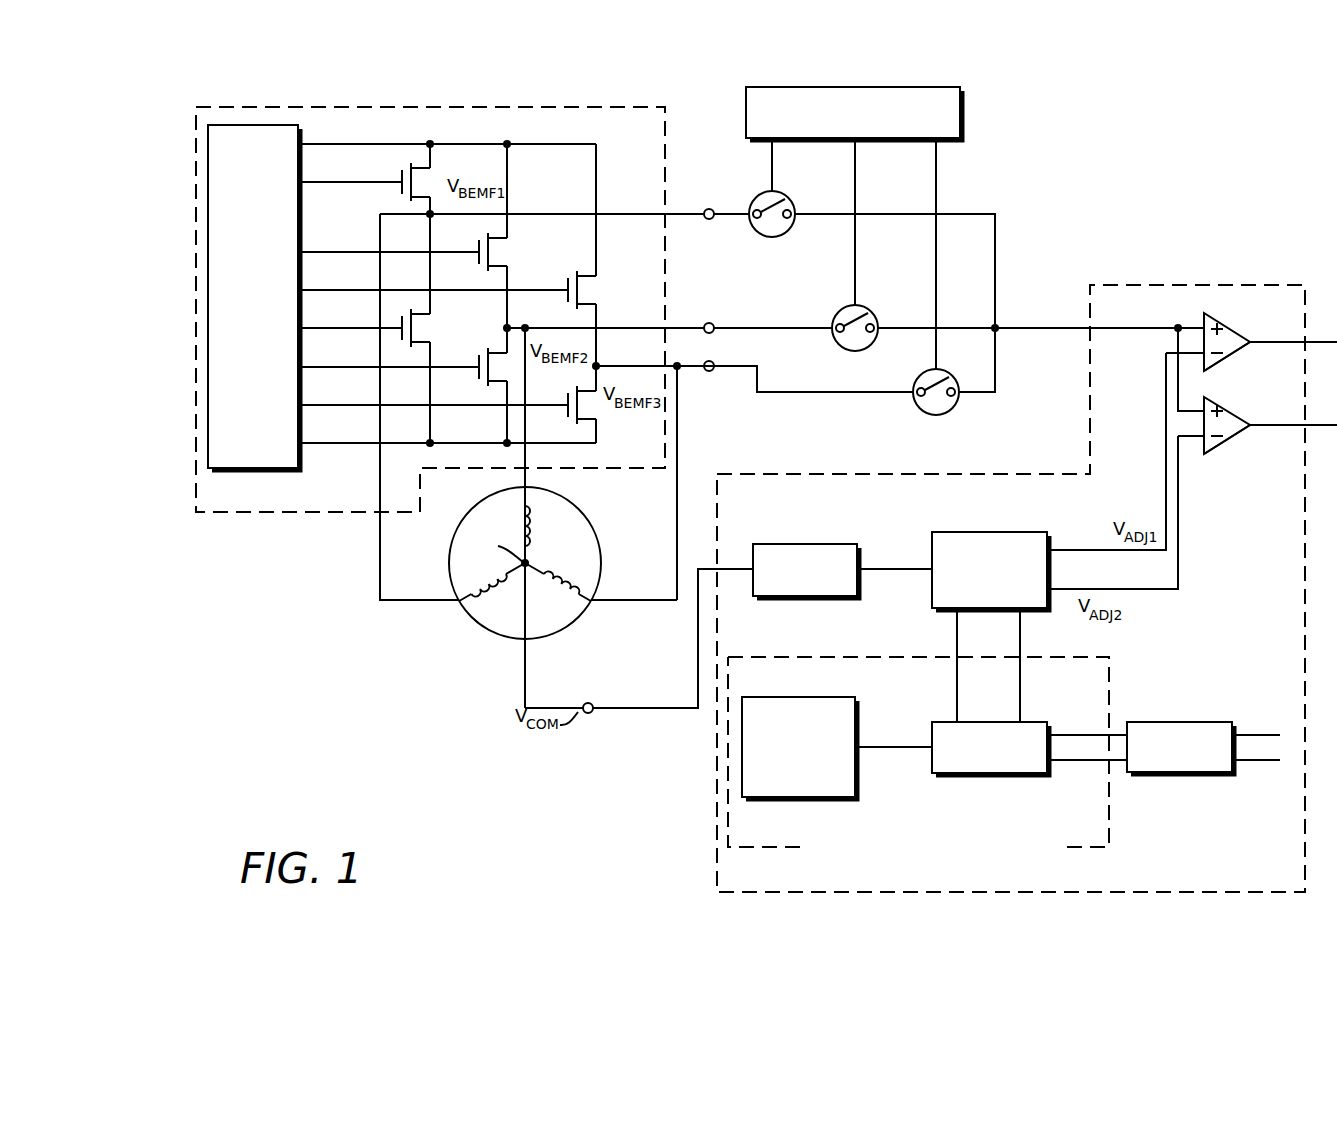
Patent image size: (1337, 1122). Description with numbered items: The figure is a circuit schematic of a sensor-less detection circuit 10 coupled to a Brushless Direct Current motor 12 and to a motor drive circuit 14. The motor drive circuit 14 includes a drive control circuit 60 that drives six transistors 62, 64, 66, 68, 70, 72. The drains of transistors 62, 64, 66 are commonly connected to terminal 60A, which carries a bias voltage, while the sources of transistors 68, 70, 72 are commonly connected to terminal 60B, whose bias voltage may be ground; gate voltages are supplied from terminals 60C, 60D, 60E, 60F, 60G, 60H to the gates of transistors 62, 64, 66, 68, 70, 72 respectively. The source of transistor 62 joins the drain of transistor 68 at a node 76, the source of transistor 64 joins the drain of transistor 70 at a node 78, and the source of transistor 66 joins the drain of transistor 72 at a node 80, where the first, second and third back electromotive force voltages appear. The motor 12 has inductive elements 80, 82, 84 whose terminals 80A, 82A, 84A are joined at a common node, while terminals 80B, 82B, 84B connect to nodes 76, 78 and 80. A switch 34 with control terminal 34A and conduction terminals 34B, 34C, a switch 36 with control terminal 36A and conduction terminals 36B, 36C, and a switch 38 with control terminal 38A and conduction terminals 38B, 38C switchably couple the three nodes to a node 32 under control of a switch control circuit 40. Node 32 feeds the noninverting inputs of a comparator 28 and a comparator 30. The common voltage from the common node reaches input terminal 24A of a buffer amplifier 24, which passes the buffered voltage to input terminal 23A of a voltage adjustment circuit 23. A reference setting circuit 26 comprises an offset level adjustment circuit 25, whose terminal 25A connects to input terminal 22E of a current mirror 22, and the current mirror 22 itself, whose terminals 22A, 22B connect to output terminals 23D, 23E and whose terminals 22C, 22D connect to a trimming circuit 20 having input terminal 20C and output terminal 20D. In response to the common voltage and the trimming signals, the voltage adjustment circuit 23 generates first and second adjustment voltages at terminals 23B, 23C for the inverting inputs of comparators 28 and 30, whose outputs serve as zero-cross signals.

The detection circuit 10 is at (820, 474).
The Brushless Direct Current (BLDC) motor 12 is at (662, 524).
The motor drive circuit 14 is at (295, 512).
The trimming circuit 20 is at (1193, 774).
The input terminal of trimming circuit 20C is at (1250, 735).
The output terminal of trimming circuit 20D is at (1245, 760).
The current mirror 22 is at (955, 775).
The terminal of current mirror 22A is at (957, 703).
The terminal of current mirror 22B is at (1020, 703).
The terminal of current mirror 22C is at (1060, 735).
The terminal of current mirror 22D is at (1058, 760).
The input terminal of current mirror 22E is at (925, 747).
The voltage adjustment circuit 23 is at (958, 532).
The input terminal of voltage adjustment circuit 23A is at (921, 568).
The output terminal of voltage adjustment circuit 23B is at (1078, 550).
The output terminal of voltage adjustment circuit 23C is at (1088, 589).
The output terminal of voltage adjustment circuit 23D is at (957, 630).
The output terminal of voltage adjustment circuit 23E is at (1020, 630).
The buffer amplifier 24 is at (775, 544).
The input terminal of buffer amplifier 24A is at (725, 572).
The offset level adjustment circuit 25 is at (778, 697).
The input terminal of offset level adjustment circuit 25A is at (868, 747).
The reference setting circuit 26 is at (822, 657).
The comparator 28 is at (1220, 316).
The comparator 30 is at (1222, 398).
The node 32 is at (996, 326).
The switch 34 is at (849, 231).
The control terminal of switch 34 34A is at (774, 180).
The conduction terminal of switch 34 34B is at (738, 212).
The conduction terminal of switch 34 34C is at (818, 213).
The switch 36 is at (954, 249).
The control terminal of switch 36 36A is at (856, 290).
The conduction terminal of switch 36 36B is at (820, 327).
The conduction terminal of switch 36 36C is at (906, 327).
The switch 38 is at (850, 288).
The control terminal of switch 38 38A is at (940, 345).
The conduction terminal of switch 38 38B is at (901, 391).
The conduction terminal of switch 38 38C is at (960, 398).
The switch control circuit 40 is at (960, 120).
The drive control circuit 60 is at (245, 470).
The terminal of drive control circuit 60A is at (300, 144).
The terminal of drive control circuit 60B is at (300, 443).
The terminal of drive control circuit 60C is at (300, 182).
The terminal of drive control circuit 60D is at (300, 252).
The terminal of drive control circuit 60E is at (300, 290).
The terminal of drive control circuit 60F is at (300, 328).
The terminal of drive control circuit 60G is at (300, 367).
The terminal of drive control circuit 60H is at (300, 405).
The drive transistor 62 is at (432, 172).
The drive transistor 64 is at (498, 258).
The drive transistor 66 is at (590, 296).
The drive transistor 68 is at (420, 328).
The drive transistor 70 is at (486, 352).
The drive transistor 72 is at (598, 426).
The node 76 is at (430, 216).
The node 78 is at (525, 328).
The node / inductive element 80 is at (496, 598).
The terminal of inductive element 80 80A is at (518, 580).
The terminal of inductive element 80 80B is at (465, 600).
The inductive element 82 is at (518, 522).
The terminal of inductive element 82 82A is at (527, 550).
The terminal of inductive element 82 82B is at (530, 490).
The inductive element 84 is at (545, 568).
The terminal of inductive element 84 84A is at (530, 572).
The terminal of inductive element 84 84B is at (592, 598).